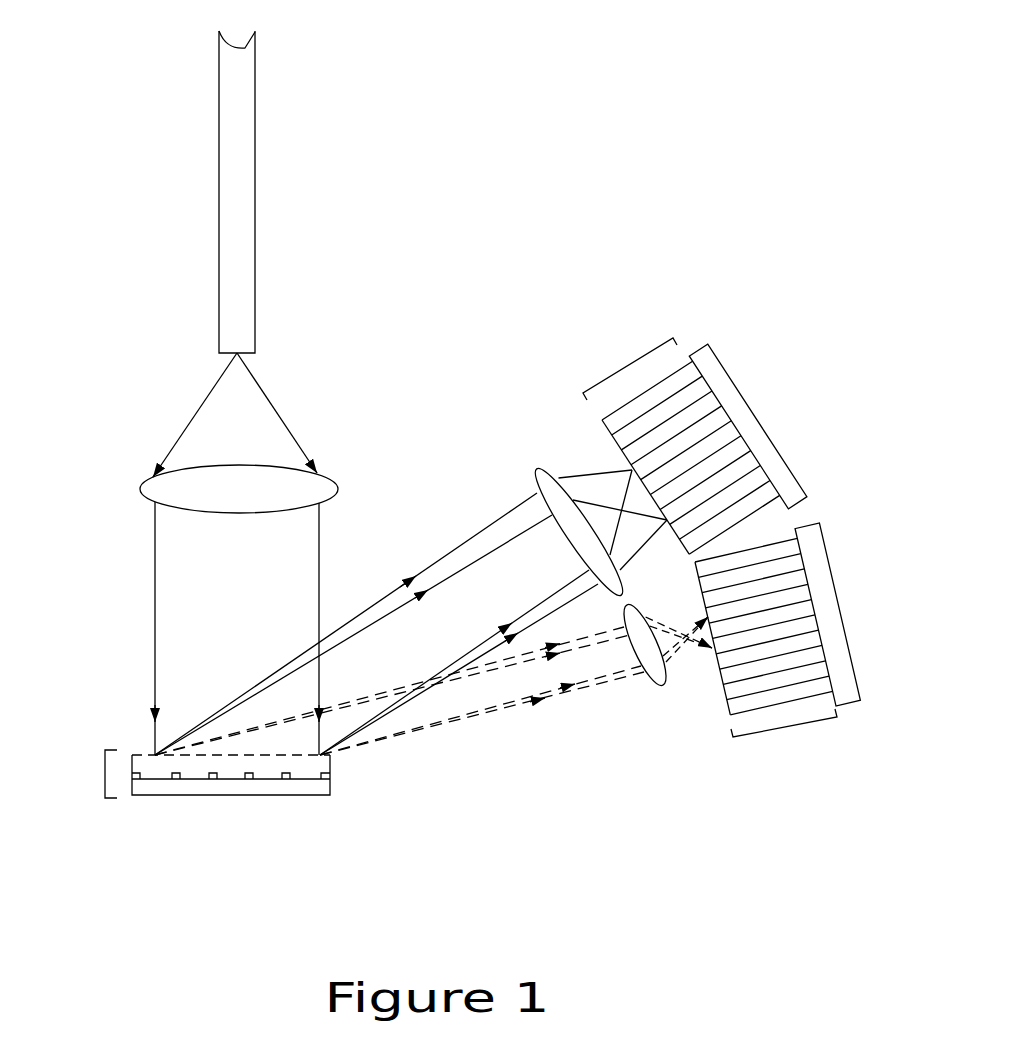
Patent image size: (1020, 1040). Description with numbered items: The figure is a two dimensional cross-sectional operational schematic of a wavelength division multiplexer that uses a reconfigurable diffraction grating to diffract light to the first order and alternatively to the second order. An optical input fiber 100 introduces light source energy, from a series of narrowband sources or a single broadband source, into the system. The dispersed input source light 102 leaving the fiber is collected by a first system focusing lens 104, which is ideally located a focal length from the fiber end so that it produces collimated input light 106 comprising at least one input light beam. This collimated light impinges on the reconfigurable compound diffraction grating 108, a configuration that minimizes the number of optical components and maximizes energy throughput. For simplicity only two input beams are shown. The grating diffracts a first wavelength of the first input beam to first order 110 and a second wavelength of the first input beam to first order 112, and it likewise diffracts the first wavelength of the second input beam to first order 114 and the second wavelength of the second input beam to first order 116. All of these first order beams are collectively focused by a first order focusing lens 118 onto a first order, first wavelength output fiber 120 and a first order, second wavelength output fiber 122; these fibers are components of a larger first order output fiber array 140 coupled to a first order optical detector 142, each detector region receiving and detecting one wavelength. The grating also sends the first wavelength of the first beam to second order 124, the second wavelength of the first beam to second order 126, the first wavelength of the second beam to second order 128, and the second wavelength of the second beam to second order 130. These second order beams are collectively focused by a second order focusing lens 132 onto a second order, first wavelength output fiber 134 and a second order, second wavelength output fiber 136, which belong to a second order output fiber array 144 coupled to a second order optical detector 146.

The optical input means fiber 100 is at (242, 92).
The dispersed input source light 102 is at (275, 412).
The first system focusing means 104 is at (165, 489).
The collimated input light 106 is at (318, 612).
The reconfigurable compound diffraction grating 108 is at (103, 778).
The first order diffracted beam of first wavelength of first input beam 110 is at (347, 620).
The first order diffracted beam of second wavelength of first input beam 112 is at (387, 612).
The first order diffracted beam of first wavelength of second input beam 114 is at (462, 655).
The first order diffracted beam of second wavelength of second input beam 116 is at (498, 642).
The first order focusing means 118 is at (537, 467).
The first order, first wavelength output means 120 is at (703, 427).
The first order, second wavelength output means 122 is at (733, 482).
The second order diffracted beam of first wavelength of first input beam 124 is at (590, 637).
The second order diffracted beam of second wavelength of first input beam 126 is at (517, 665).
The second order diffracted beam of first wavelength of second input beam 128 is at (480, 715).
The second order diffracted beam of second wavelength of second input beam 130 is at (423, 727).
The second order focusing means 132 is at (660, 678).
The second order, first wavelength output means 134 is at (802, 598).
The second order, second wavelength output means 136 is at (803, 633).
The first order set of output means 140 is at (630, 362).
The first order optical detection means 142 is at (698, 350).
The second order set of output means 144 is at (782, 730).
The second order optical detection means 146 is at (817, 547).